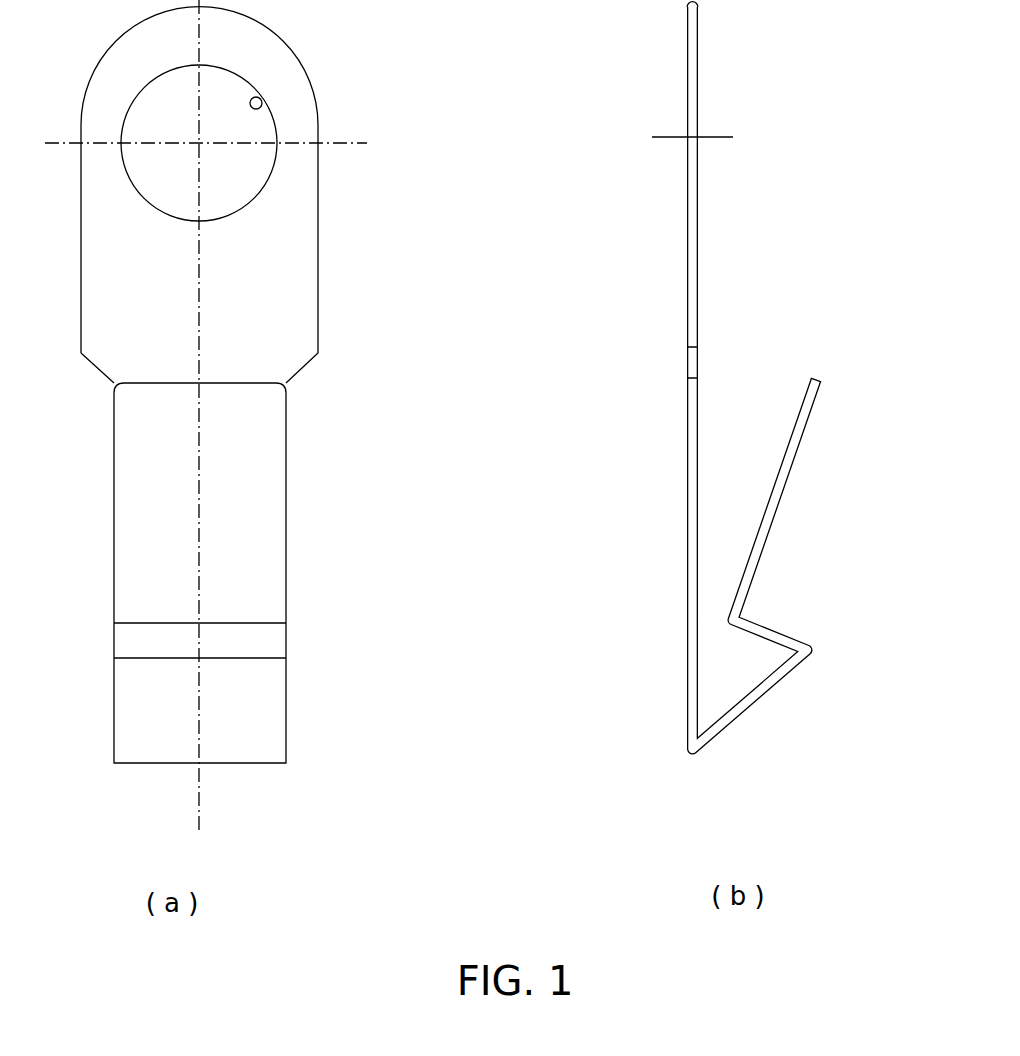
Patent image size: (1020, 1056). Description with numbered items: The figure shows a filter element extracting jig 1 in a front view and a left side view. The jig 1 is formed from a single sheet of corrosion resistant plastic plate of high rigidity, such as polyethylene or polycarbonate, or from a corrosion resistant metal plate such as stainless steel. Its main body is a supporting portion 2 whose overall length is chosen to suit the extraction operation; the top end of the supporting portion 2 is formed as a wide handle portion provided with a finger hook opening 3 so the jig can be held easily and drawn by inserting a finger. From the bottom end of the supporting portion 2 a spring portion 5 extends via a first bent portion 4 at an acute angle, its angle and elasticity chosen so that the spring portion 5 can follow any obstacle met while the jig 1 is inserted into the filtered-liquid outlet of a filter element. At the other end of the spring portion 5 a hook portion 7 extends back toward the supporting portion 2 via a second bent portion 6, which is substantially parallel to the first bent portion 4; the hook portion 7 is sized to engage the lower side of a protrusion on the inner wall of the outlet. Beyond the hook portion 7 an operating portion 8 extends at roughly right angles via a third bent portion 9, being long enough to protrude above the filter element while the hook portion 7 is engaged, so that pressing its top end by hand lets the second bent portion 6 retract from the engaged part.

The filter element extracting jig 1 is at (352, 338).
The supporting portion 2 is at (318, 250).
The finger hook opening 3 is at (270, 110).
The first bent portion 4 is at (688, 760).
The spring portion 5 is at (260, 703).
The second bent portion 6 is at (813, 650).
The hook portion 7 is at (272, 639).
The operating portion 8 is at (273, 482).
The third bent portion 9 is at (738, 617).